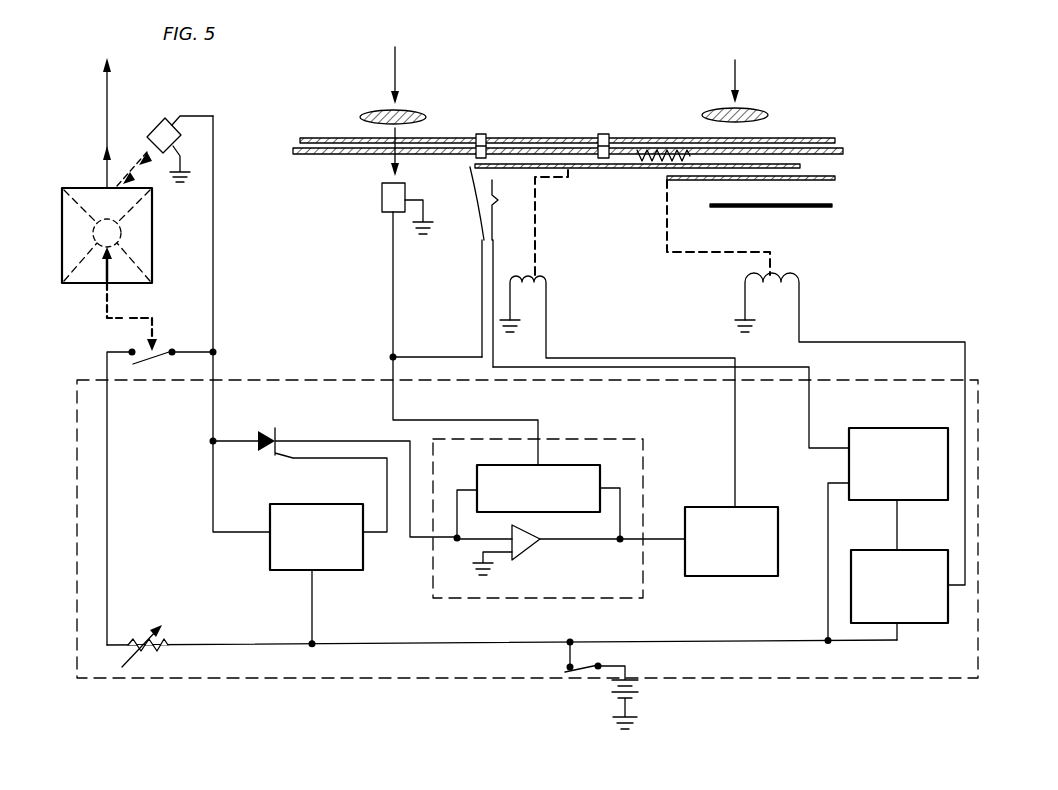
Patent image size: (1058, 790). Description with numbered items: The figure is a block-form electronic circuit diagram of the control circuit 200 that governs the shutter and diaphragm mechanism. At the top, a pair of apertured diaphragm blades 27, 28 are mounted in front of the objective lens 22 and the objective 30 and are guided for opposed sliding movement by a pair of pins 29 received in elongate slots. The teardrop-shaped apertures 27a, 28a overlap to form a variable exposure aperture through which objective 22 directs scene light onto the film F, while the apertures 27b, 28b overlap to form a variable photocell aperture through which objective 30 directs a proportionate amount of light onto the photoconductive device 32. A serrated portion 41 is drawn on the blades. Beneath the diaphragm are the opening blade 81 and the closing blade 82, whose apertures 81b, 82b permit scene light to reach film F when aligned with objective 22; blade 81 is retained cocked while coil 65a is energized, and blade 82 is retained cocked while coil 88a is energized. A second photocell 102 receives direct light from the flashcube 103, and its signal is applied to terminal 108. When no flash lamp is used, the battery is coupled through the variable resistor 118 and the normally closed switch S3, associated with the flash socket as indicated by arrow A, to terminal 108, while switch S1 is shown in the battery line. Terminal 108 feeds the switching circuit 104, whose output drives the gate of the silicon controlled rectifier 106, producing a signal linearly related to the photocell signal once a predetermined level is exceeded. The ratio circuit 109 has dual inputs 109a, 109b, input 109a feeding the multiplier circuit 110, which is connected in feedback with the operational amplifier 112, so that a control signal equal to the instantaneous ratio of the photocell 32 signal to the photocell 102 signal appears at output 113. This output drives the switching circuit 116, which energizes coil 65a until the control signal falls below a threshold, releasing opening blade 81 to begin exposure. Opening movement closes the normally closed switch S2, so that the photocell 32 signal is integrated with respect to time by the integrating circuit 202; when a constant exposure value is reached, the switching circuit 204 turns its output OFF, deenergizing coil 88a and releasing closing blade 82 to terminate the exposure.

The objective lens 22 is at (750, 110).
The apertured blade 27 is at (505, 138).
The teardrop-shaped aperture 27a is at (713, 138).
The teardrop-shaped aperture 27b is at (366, 138).
The apertured blade 28 is at (293, 151).
The teardrop-shaped aperture 28a is at (760, 142).
The teardrop-shaped aperture 28b is at (360, 156).
The pins 29 is at (480, 134).
The objective 30 is at (408, 110).
The photoconductive device 32 is at (388, 197).
The serrated edge 41 is at (650, 160).
The coil 65a is at (552, 291).
The opening blade 81 is at (800, 166).
The aperture 81b is at (655, 170).
The closing blade 82 is at (835, 178).
The aperture 82b is at (762, 180).
The coil 88a is at (805, 291).
The photographic film F is at (800, 208).
The normally closed switch S2 is at (480, 228).
The second photocell 102 is at (160, 125).
The flashcube 103 is at (80, 188).
The arrow A is at (120, 318).
The normally closed switch S3 is at (126, 346).
The terminal 108 is at (220, 345).
The silicon controlled rectifier 106 is at (262, 437).
The switching circuit 104 is at (275, 573).
The variable resistor 118 is at (152, 631).
The electronic control circuit 200 is at (335, 678).
The switch S1 is at (592, 672).
The ratio circuit 109 is at (559, 536).
The input 109a is at (545, 423).
The input 109b is at (428, 540).
The multiplier circuit 110 is at (500, 465).
The operational amplifier 112 is at (533, 546).
The output 113 is at (670, 539).
The switching circuit 116 is at (748, 570).
The integrating circuit 202 is at (905, 430).
The switching circuit 204 is at (930, 617).